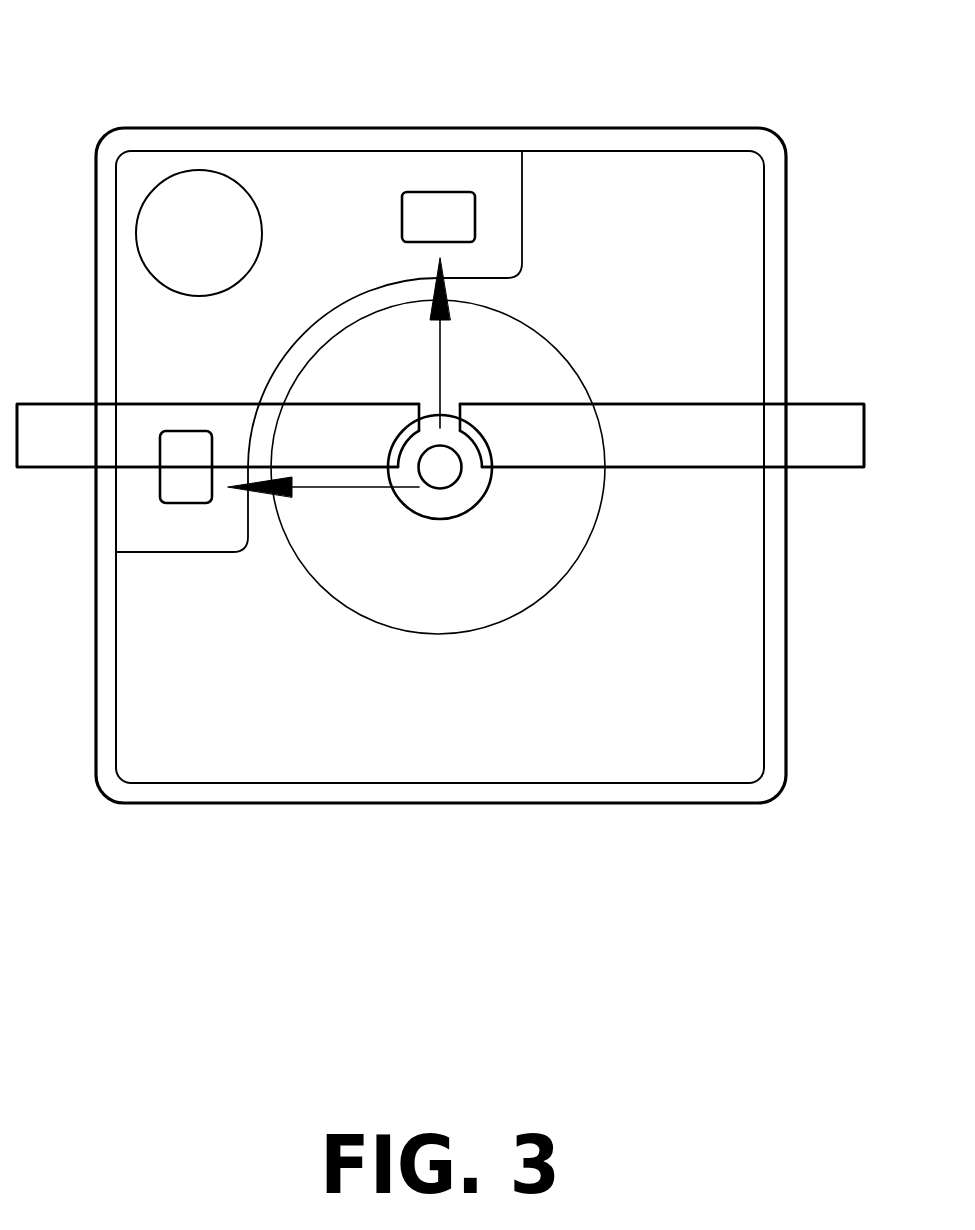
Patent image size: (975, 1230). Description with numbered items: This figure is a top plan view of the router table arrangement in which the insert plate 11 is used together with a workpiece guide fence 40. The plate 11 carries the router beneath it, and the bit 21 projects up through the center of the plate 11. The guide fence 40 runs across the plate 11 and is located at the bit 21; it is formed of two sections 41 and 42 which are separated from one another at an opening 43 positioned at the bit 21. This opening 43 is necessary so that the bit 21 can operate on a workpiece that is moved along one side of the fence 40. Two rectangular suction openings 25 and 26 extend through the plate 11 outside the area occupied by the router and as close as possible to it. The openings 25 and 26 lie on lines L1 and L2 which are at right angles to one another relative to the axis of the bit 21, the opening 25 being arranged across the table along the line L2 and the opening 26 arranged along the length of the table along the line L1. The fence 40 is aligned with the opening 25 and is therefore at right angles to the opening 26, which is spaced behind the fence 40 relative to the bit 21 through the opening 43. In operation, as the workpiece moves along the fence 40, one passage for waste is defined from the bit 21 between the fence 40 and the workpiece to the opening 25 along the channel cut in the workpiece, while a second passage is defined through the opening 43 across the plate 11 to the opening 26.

The insert plate 11 is at (715, 258).
The guide fence 40 is at (820, 423).
The fence section 41 is at (683, 423).
The fence section 42 is at (239, 427).
The opening 43 is at (449, 425).
The bit 21 is at (462, 491).
The suction opening 26 is at (463, 197).
The suction opening 25 is at (187, 503).
The line L1 is at (442, 350).
The line L2 is at (377, 487).